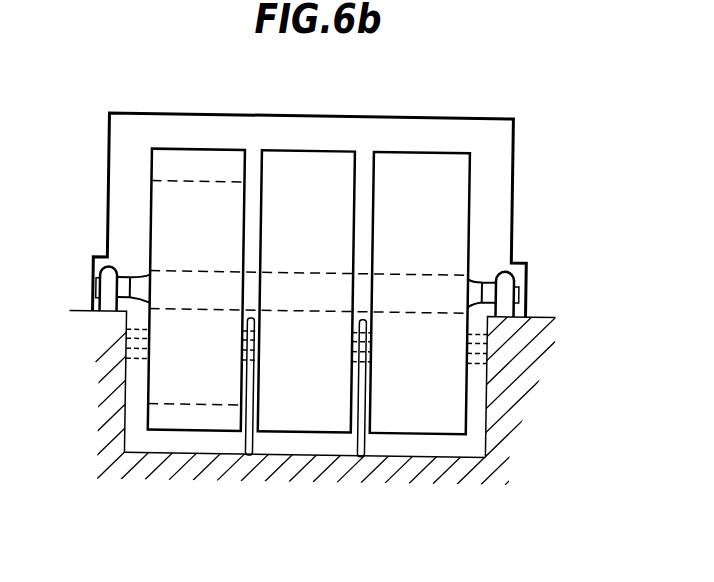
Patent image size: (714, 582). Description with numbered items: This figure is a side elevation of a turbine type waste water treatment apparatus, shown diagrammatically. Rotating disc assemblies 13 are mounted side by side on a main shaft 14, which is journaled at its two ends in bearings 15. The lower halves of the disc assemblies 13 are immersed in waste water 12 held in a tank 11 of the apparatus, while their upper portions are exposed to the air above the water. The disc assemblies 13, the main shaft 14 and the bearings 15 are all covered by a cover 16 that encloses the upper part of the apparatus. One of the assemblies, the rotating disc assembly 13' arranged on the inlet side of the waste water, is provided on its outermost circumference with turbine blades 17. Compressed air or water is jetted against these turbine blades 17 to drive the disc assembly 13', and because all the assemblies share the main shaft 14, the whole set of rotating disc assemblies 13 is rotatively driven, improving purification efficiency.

The tank 11 is at (125, 414).
The waste water 12 is at (487, 331).
The rotating disc assemblies 13 is at (306, 267).
The rotating disc assembly 13' is at (205, 249).
The main shaft 14 is at (474, 290).
The bearings 15 is at (103, 260).
The cover 16 is at (108, 155).
The turbine blades 17 is at (178, 418).